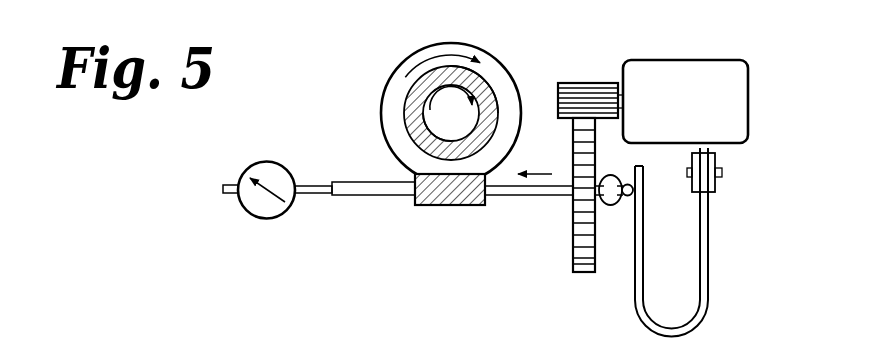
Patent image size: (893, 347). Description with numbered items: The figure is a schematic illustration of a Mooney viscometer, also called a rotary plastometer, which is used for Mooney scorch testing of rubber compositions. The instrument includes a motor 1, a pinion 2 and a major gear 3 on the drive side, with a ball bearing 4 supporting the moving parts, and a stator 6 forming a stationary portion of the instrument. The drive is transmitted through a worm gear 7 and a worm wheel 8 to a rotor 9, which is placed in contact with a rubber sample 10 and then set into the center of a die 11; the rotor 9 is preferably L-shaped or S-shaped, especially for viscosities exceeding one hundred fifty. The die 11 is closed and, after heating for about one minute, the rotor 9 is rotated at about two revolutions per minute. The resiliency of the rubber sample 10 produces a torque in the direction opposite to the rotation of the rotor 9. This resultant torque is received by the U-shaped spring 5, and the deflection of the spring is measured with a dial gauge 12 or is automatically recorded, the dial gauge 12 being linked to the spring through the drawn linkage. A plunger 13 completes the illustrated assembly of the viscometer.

The motor 1 is at (710, 58).
The pinion 2 is at (597, 82).
The major gear 3 is at (572, 222).
The ball bearing 4 is at (631, 203).
The U-shaped spring 5 is at (635, 228).
The stator 6 is at (718, 193).
The worm gear 7 is at (408, 175).
The worm wheel 8 is at (405, 50).
The rotor 9 is at (462, 127).
The rubber sample 10 is at (405, 90).
The die 11 is at (487, 77).
The dial gauge 12 is at (285, 217).
The plunger 13 is at (423, 138).